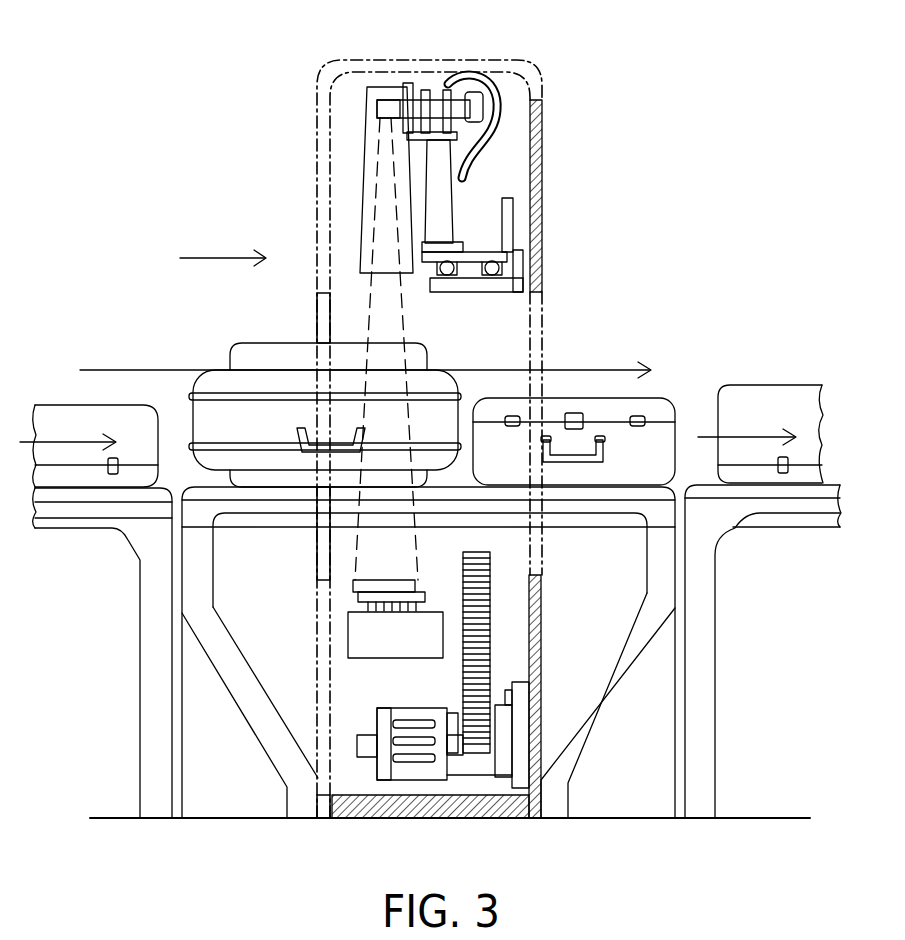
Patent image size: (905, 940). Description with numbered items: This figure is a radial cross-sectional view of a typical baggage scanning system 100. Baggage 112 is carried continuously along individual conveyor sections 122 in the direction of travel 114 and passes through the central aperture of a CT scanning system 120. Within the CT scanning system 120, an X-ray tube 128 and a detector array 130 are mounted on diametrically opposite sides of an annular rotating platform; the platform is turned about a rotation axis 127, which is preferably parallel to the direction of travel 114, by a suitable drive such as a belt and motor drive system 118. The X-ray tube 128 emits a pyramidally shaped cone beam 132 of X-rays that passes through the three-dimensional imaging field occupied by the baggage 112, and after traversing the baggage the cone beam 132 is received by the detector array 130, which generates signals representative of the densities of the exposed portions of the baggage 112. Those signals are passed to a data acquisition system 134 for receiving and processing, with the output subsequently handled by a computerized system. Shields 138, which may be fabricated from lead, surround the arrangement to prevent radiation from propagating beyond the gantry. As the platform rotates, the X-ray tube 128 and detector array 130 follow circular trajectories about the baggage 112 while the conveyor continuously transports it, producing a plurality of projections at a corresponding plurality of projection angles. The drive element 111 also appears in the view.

The baggage scanning system 100 is at (706, 867).
The drive rack 111 is at (488, 643).
The baggage 112 is at (281, 343).
The direction of travel 114 is at (220, 257).
The motor drive system 118 is at (437, 780).
The CT scanning system 120 is at (385, 58).
The conveyor section 122 is at (717, 641).
The rotation axis 127 is at (135, 370).
The X-ray tube 128 is at (433, 93).
The detector array 130 is at (377, 578).
The cone beam 132 is at (405, 336).
The data acquisition system 134 is at (355, 655).
The shields 138 is at (353, 594).